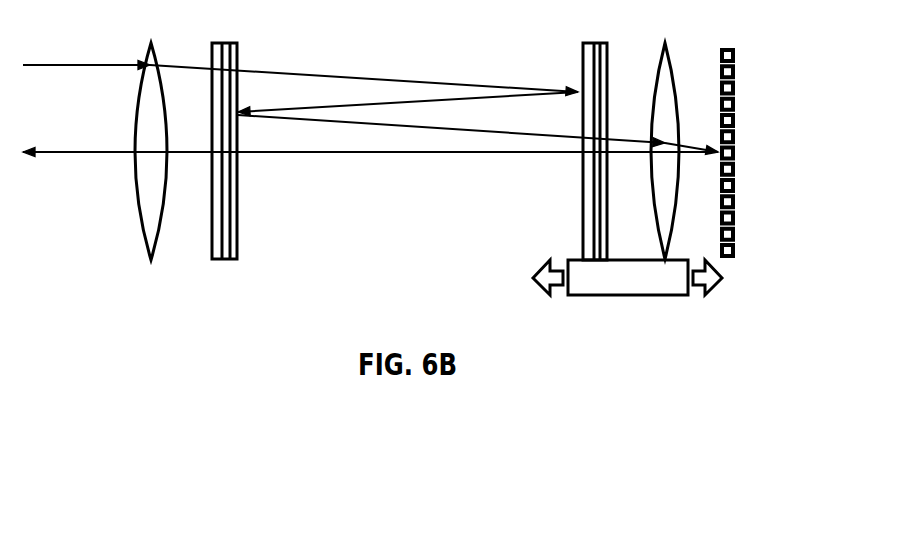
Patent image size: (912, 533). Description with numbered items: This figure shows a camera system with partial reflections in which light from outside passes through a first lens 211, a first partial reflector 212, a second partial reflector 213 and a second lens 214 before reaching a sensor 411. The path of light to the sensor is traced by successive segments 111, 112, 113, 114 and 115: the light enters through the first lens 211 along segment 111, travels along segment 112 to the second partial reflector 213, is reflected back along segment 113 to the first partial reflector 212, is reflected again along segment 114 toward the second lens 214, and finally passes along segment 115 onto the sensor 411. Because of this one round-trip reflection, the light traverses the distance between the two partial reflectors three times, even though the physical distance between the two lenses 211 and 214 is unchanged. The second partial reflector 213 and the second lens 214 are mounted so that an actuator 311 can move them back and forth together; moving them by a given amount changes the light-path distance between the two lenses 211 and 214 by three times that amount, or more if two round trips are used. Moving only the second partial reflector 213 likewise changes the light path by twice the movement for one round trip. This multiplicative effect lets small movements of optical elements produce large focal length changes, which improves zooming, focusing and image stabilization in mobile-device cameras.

The light path segment 111 is at (98, 65).
The light path segment 112 is at (312, 73).
The light path segment 113 is at (280, 108).
The light path segment 114 is at (448, 128).
The light path segment 115 is at (682, 143).
The first lens 211 is at (160, 251).
The first partial reflector 212 is at (230, 245).
The second partial reflector 213 is at (582, 212).
The second lens 214 is at (673, 57).
The actuator 311 is at (660, 295).
The sensor 411 is at (733, 88).